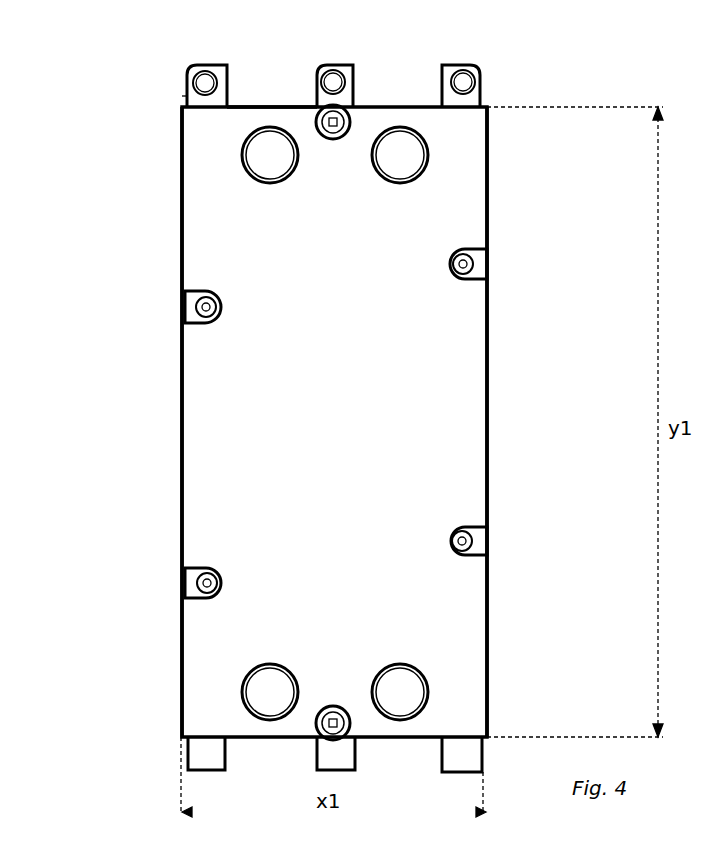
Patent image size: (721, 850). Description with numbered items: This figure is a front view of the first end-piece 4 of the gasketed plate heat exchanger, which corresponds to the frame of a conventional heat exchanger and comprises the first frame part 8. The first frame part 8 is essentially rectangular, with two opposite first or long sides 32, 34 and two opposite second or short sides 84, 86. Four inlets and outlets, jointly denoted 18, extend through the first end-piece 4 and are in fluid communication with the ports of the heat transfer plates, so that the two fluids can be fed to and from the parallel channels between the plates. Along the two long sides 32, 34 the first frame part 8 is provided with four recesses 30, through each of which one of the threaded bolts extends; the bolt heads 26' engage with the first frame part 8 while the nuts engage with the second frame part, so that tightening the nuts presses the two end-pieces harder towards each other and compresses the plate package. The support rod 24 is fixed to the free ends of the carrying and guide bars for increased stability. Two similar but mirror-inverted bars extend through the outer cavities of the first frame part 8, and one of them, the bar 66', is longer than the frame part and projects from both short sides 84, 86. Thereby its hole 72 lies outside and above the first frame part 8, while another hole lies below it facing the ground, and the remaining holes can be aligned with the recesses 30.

The first end-piece 4 is at (540, 84).
The first frame part 8 is at (444, 342).
The inlets and outlets 18 is at (398, 153).
The support rod 24 is at (347, 100).
The bolt heads 26' is at (343, 280).
The recesses 30 is at (183, 571).
The first or long side 32 is at (180, 403).
The first or long side 34 is at (489, 405).
The bar 66' is at (118, 130).
The hole 72 is at (187, 72).
The second or short side 84 is at (262, 106).
The second or short side 86 is at (250, 740).